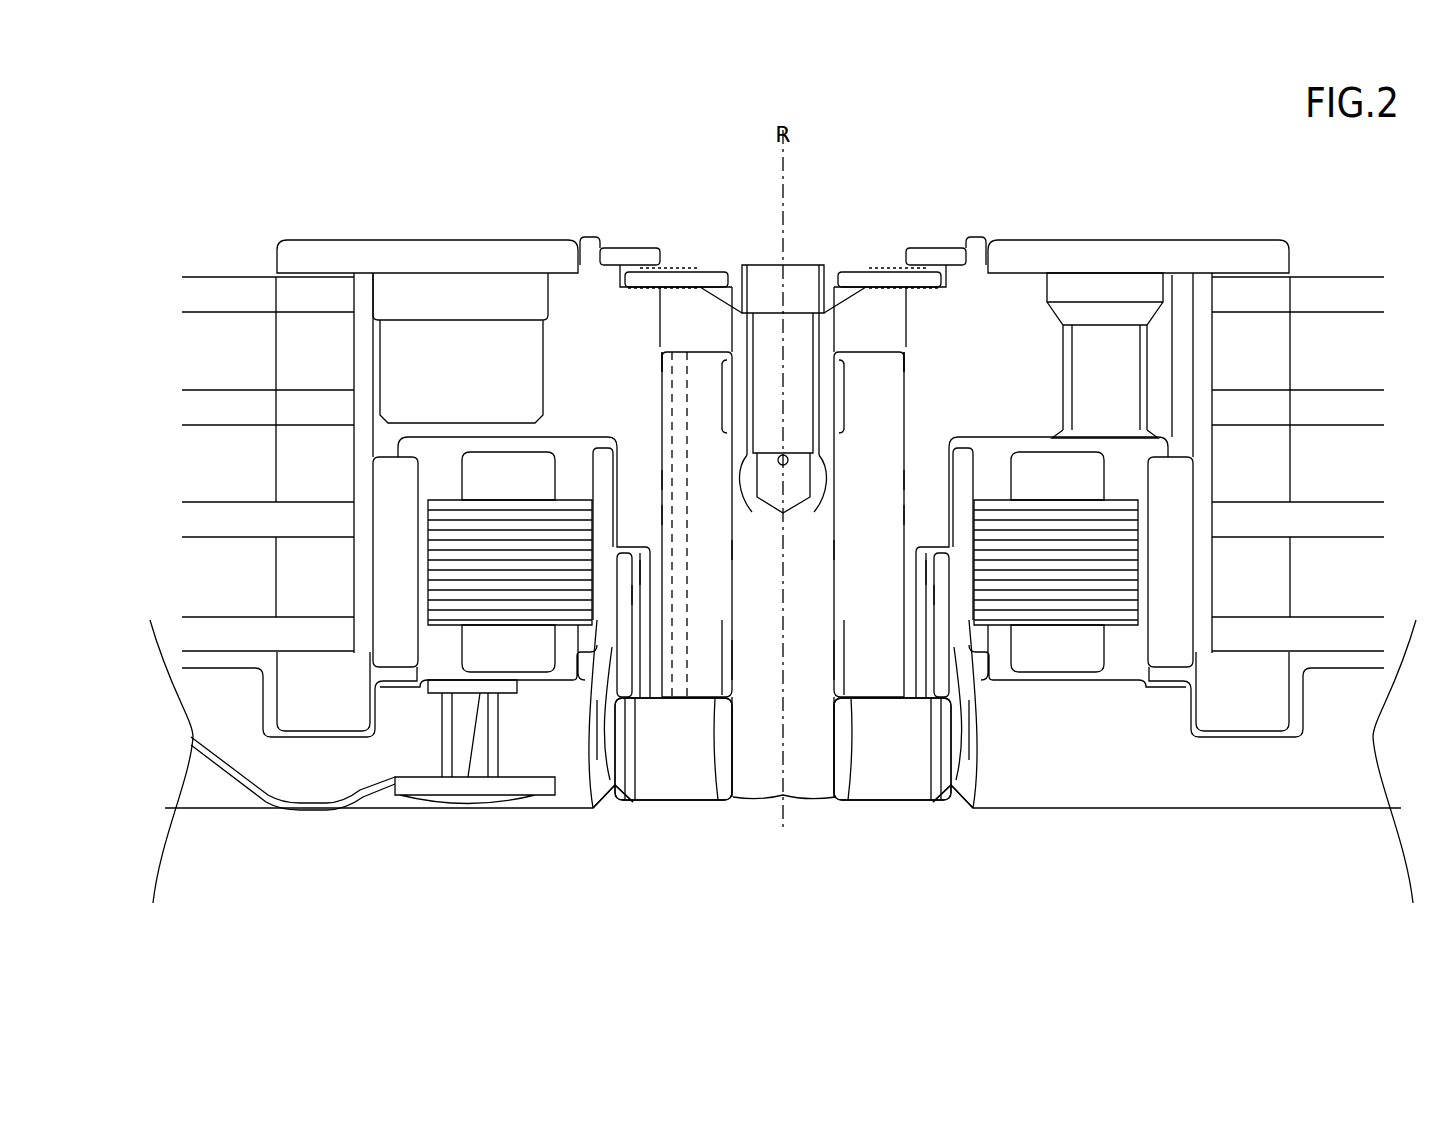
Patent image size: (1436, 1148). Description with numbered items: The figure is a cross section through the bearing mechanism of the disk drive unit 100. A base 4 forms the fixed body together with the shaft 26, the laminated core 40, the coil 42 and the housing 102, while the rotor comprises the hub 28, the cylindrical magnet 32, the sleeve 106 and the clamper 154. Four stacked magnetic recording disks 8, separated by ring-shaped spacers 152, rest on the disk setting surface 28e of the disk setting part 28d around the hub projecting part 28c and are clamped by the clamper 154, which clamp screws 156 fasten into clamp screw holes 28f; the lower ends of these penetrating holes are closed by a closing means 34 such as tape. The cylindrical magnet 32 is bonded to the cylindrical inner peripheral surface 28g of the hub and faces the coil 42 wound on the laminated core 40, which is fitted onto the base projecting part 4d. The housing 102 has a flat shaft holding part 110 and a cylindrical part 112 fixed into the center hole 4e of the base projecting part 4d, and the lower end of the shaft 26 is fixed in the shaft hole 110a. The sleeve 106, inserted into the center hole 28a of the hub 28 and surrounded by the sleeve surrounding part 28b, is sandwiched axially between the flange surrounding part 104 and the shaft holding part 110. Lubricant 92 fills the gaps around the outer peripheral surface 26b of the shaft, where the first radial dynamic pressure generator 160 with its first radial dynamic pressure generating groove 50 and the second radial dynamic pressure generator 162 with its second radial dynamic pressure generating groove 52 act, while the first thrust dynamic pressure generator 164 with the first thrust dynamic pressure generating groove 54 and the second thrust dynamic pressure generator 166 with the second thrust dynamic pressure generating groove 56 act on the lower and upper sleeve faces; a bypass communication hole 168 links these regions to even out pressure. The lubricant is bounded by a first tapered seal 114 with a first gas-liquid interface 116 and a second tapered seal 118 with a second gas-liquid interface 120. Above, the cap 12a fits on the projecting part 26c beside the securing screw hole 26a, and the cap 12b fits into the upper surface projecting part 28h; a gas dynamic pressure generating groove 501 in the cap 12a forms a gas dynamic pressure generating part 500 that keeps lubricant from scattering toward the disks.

The base 4 is at (205, 790).
The magnetic recording disk 8 is at (207, 627).
The ring-shaped spacer 152 is at (317, 573).
The clamper 154 is at (315, 258).
The cap 12a is at (707, 280).
The cap 12b is at (620, 258).
The upper surface projecting part 28h is at (980, 243).
The gas dynamic pressure generating part 500 is at (662, 268).
The gas dynamic pressure generating groove 501 is at (640, 290).
The flange surrounding part 104 is at (712, 297).
The securing screw hole 26a is at (765, 290).
The projecting part 26c is at (820, 275).
The second tapered seal 118 is at (660, 300).
The second gas-liquid interface 120 is at (660, 320).
The closing means 34 is at (1115, 430).
The first radial dynamic pressure generating groove 50 is at (747, 487).
The shaft 26 is at (822, 760).
The bypass communication hole 168 is at (688, 352).
The second thrust dynamic pressure generator 166 is at (692, 360).
The second thrust dynamic pressure generating groove 56 is at (783, 362).
The first radial dynamic pressure generator 160 is at (718, 430).
The second radial dynamic pressure generator 162 is at (718, 690).
The center hole 28a is at (665, 477).
The sleeve surrounding part 28b is at (647, 513).
The outer peripheral surface 26b is at (730, 550).
The hub 28 is at (563, 285).
The cylindrical inner peripheral surface 28g is at (393, 430).
The clamp screw hole 28f is at (1085, 360).
The hub projecting part 28c is at (367, 640).
The disk setting part 28d is at (317, 703).
The disk setting surface 28e is at (290, 700).
The coil 42 is at (502, 470).
The laminated core 40 is at (438, 515).
The clamp screw 156 is at (1068, 285).
The cylindrical magnet 32 is at (390, 640).
The center hole 4e is at (617, 640).
The first tapered seal 114 is at (640, 573).
The first gas-liquid interface 116 is at (637, 597).
The second radial dynamic pressure generating groove 52 is at (733, 657).
The first thrust dynamic pressure generator 164 is at (697, 700).
The first thrust dynamic pressure generating groove 54 is at (783, 749).
The base projecting part 4d is at (601, 690).
The lubricant 92 is at (615, 790).
The cylindrical part 112 is at (635, 760).
The shaft holding part 110 is at (678, 790).
The sleeve 106 is at (715, 760).
The shaft hole 110a is at (737, 777).
The housing 102 is at (705, 877).
The disk drive unit 100 is at (135, 115).